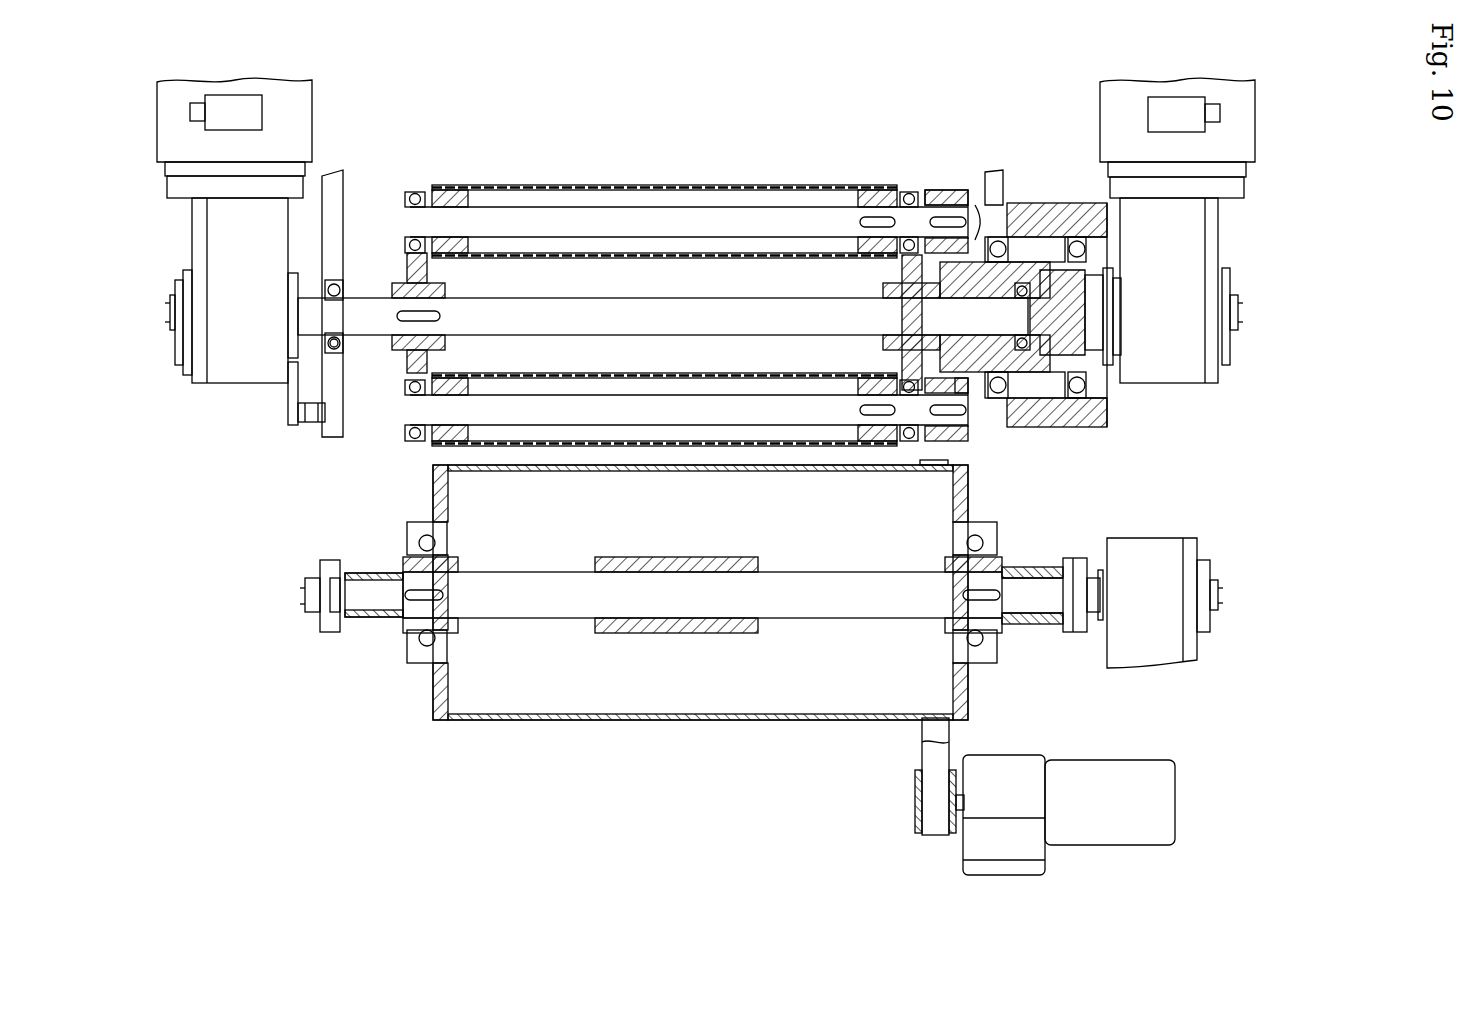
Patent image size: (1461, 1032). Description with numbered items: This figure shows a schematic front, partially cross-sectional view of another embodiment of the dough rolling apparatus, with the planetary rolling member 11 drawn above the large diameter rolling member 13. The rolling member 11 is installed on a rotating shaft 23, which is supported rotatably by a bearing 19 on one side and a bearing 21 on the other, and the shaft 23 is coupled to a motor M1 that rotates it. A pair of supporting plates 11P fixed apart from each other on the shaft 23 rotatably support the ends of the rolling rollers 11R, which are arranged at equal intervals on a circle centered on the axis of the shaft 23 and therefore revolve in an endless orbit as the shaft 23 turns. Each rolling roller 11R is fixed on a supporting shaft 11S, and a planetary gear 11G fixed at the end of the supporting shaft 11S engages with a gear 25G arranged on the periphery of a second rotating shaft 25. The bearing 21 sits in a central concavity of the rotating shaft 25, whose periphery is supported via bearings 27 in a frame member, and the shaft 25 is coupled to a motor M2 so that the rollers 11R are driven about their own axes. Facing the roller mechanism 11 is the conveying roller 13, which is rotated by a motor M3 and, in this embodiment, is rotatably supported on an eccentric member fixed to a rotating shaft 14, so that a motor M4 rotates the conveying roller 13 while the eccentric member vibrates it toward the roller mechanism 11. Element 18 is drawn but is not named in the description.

The rolling member 11 is at (719, 248).
The rolling rollers 11R is at (685, 185).
The supporting shaft 11S is at (752, 185).
The supporting plates 11P is at (400, 258).
The planetary gear 11G is at (952, 190).
The rotating shaft 23 is at (663, 313).
The rotating shaft 25 is at (1080, 313).
The gear 25G is at (982, 205).
The bearings 27 is at (1000, 385).
The bearing 21 is at (1070, 410).
The bearing 19 is at (345, 345).
The rolling member 13 is at (430, 688).
The rotating shaft 14 is at (822, 600).
The drum hub 18 is at (945, 558).
The motor M1 is at (233, 82).
The motor M2 is at (1183, 82).
The motor M3 is at (1180, 535).
The motor M4 is at (1160, 780).